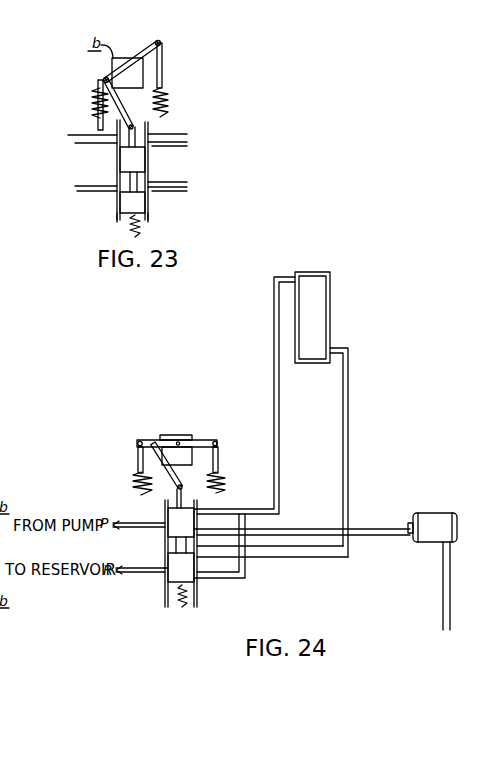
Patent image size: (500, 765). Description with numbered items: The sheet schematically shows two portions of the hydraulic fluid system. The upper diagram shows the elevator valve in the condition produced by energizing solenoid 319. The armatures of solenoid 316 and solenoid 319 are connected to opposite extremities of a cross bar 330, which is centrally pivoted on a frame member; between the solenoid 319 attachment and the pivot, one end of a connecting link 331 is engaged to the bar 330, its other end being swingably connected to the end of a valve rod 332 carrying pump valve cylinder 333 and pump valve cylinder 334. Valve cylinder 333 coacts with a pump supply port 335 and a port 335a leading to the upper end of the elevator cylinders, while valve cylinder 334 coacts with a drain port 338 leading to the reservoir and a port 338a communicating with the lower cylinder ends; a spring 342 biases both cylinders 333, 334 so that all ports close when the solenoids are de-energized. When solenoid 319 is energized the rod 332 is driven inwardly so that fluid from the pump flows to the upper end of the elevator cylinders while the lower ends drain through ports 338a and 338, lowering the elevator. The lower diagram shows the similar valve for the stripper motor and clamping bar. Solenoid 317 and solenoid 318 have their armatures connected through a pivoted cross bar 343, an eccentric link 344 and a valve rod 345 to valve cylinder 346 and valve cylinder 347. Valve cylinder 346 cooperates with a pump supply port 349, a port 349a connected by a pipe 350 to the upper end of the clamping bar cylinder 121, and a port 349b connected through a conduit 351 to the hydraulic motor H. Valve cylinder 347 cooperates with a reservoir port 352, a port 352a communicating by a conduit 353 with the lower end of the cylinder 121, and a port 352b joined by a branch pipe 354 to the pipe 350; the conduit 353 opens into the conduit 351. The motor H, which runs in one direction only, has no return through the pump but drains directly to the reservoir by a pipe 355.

In FIG. 23, the cross bar 330 is at (112, 63).
In FIG. 23, the connecting link 331 is at (104, 80).
In FIG. 23, the solenoid 319 is at (92, 108).
In FIG. 23, the solenoid 316 is at (168, 101).
In FIG. 23, the valve rod 332 is at (70, 136).
In FIG. 23, the port 335 is at (112, 149).
In FIG. 23, the port 335a is at (152, 137).
In FIG. 23, the pump valve cylinder 333 is at (122, 162).
In FIG. 23, the port 338 is at (122, 191).
In FIG. 23, the port 338a is at (152, 182).
In FIG. 23, the pump valve cylinder 334 is at (120, 208).
In FIG. 23, the spring 342 is at (139, 232).
In FIG. 24, the clamping bar cylinder 121 is at (318, 315).
In FIG. 24, the pivoted cross bar 343 is at (202, 442).
In FIG. 24, the eccentric link 344 is at (158, 457).
In FIG. 24, the solenoid 318 is at (133, 480).
In FIG. 24, the solenoid 317 is at (227, 482).
In FIG. 24, the valve rod 345 is at (176, 495).
In FIG. 24, the port 349 is at (165, 513).
In FIG. 24, the port 349a is at (200, 508).
In FIG. 24, the port 349b is at (200, 522).
In FIG. 24, the valve cylinder 346 is at (173, 531).
In FIG. 24, the valve cylinder 347 is at (157, 573).
In FIG. 24, the pipe 350 is at (280, 438).
In FIG. 24, the conduit 351 is at (307, 528).
In FIG. 24, the port 352 is at (167, 571).
In FIG. 24, the port 352a is at (246, 546).
In FIG. 24, the port 352b is at (200, 581).
In FIG. 24, the conduit 353 is at (352, 480).
In FIG. 24, the branch pipe 354 is at (248, 570).
In FIG. 24, the pipe 355 is at (451, 583).
In FIG. 24, the hydraulic motor H is at (435, 523).